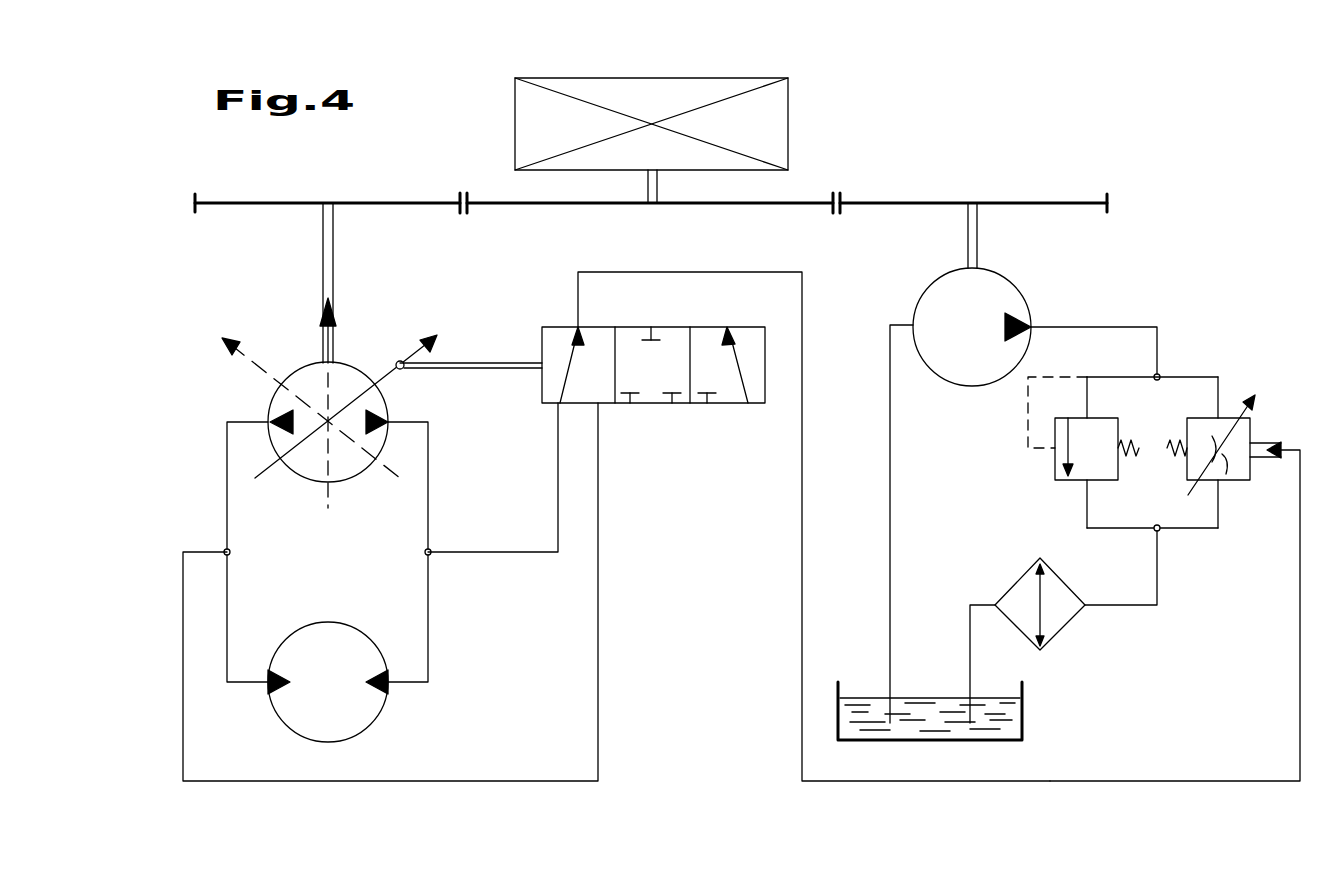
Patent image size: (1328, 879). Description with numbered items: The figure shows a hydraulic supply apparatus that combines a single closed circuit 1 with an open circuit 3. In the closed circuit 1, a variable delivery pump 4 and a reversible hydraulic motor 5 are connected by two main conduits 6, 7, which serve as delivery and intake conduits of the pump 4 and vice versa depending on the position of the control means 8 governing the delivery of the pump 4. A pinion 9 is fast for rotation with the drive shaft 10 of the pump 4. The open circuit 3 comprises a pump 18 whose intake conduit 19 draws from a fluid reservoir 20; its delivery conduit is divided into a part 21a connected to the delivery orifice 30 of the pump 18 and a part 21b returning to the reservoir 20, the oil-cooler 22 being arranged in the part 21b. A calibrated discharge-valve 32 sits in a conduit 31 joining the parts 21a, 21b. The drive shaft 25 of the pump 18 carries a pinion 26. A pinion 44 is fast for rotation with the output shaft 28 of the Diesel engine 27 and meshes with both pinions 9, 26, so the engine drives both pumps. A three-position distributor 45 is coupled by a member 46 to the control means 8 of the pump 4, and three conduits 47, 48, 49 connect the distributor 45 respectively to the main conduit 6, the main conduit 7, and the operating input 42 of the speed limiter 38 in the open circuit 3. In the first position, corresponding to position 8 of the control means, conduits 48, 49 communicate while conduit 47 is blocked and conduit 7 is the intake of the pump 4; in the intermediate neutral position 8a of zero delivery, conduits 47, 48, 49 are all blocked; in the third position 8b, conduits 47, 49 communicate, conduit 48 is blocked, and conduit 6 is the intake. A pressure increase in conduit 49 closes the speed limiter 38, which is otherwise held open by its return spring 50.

The closed circuit 1 is at (426, 600).
The open circuit 3 is at (1022, 412).
The variable delivery pump 4 is at (320, 470).
The reversible hydraulic motor 5 is at (333, 630).
The main conduit 6 is at (230, 540).
The main conduit 7 is at (425, 547).
The control means of the delivery of the pump 8 is at (407, 357).
The position of the control means 8a is at (335, 342).
The position of the control means 8b is at (262, 372).
The pinion 9 is at (197, 203).
The drive shaft 10 is at (322, 234).
The pump 18 is at (962, 380).
The intake conduit 19 is at (889, 433).
The fluid reservoir 20 is at (1025, 688).
The delivery conduit part 21a is at (1178, 376).
The delivery conduit part 21b is at (1185, 532).
The oil-cooler 22 is at (1022, 583).
The drive shaft 25 is at (967, 240).
The pinion 26 is at (840, 202).
The Diesel engine 27 is at (790, 124).
The output shaft 28 is at (658, 186).
The delivery orifice 30 is at (1036, 325).
The conduit 31 is at (1097, 375).
The calibrated discharge-valve 32 is at (1102, 481).
The speed limiter 38 is at (1232, 456).
The operating input 42 is at (1282, 453).
The pinion 44 is at (470, 200).
The three-position distributor 45 is at (688, 412).
The member 46 is at (512, 370).
The conduit 47 is at (497, 777).
The conduit 48 is at (497, 548).
The conduit 49 is at (675, 271).
The return spring 50 is at (1175, 446).